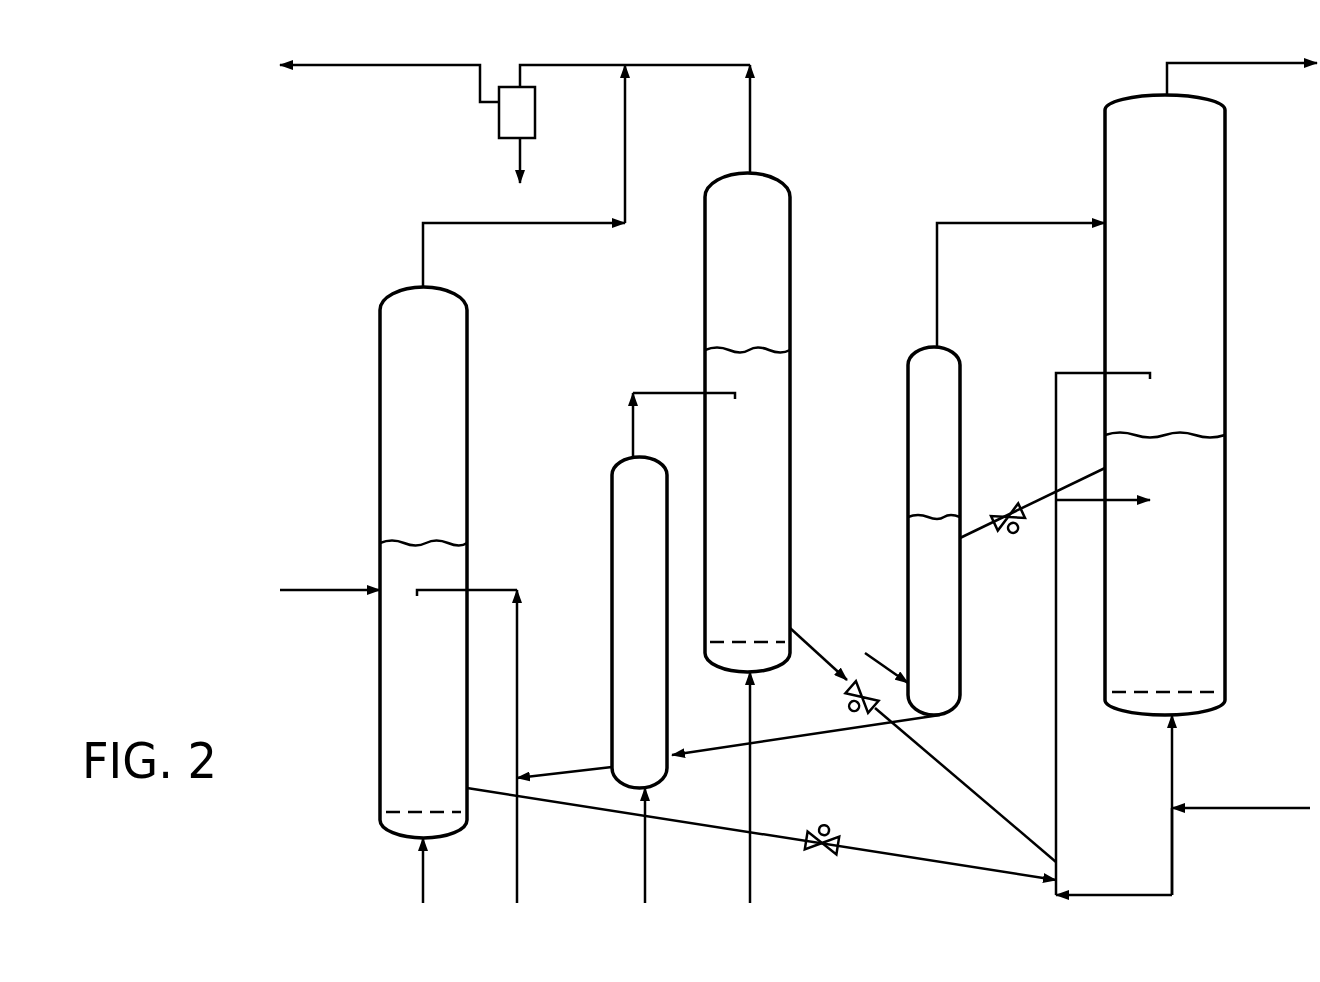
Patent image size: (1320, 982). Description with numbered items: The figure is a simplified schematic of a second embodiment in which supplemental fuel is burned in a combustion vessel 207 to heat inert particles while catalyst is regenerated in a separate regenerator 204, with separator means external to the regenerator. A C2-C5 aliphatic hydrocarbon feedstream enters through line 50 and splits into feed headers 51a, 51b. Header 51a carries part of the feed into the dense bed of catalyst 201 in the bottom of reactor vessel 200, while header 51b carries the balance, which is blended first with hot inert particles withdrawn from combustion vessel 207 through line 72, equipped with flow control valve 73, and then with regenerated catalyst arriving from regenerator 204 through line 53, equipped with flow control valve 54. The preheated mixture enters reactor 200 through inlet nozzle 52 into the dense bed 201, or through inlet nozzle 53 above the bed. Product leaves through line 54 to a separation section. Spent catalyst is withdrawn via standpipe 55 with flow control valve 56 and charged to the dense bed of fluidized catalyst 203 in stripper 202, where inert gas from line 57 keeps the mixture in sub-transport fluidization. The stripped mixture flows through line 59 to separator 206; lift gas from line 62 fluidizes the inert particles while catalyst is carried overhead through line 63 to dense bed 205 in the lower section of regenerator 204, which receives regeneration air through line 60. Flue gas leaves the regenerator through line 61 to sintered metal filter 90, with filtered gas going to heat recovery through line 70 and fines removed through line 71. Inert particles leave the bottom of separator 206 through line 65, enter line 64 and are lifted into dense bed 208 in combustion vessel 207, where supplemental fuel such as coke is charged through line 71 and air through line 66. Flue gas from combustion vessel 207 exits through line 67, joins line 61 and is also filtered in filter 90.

The line 50 is at (1266, 806).
The feed header 51a is at (1176, 775).
The feed header 51b is at (1176, 878).
The inlet nozzle 52 is at (1100, 503).
The line / inlet nozzle 53 is at (1097, 370).
The flow control valve / line 54 is at (1203, 62).
The standpipe 55 is at (1038, 500).
The flow control valve 56 is at (1006, 509).
The line 57 is at (893, 668).
The line 59 is at (805, 735).
The line 60 is at (752, 722).
The line 61 is at (750, 120).
The line 62 is at (647, 880).
The line 63 is at (646, 395).
The line 64 is at (519, 880).
The line 65 is at (595, 767).
The line 66 is at (425, 880).
The line 67 is at (486, 225).
The line 70 is at (338, 66).
The line 71 is at (518, 157).
The line 72 is at (892, 862).
The flow control valve 73 is at (818, 853).
The sintered metal filter 90 is at (530, 118).
The reactor vessel 200 is at (1225, 358).
The dense bed of catalyst 201 is at (1188, 581).
The stripper 202 is at (908, 447).
The dense bed of fluidized catalyst 203 is at (962, 634).
The regenerator 204 is at (790, 312).
The dense bed 205 is at (775, 519).
The separator 206 is at (664, 626).
The combustion vessel 207 is at (467, 500).
The dense bed 208 is at (448, 671).